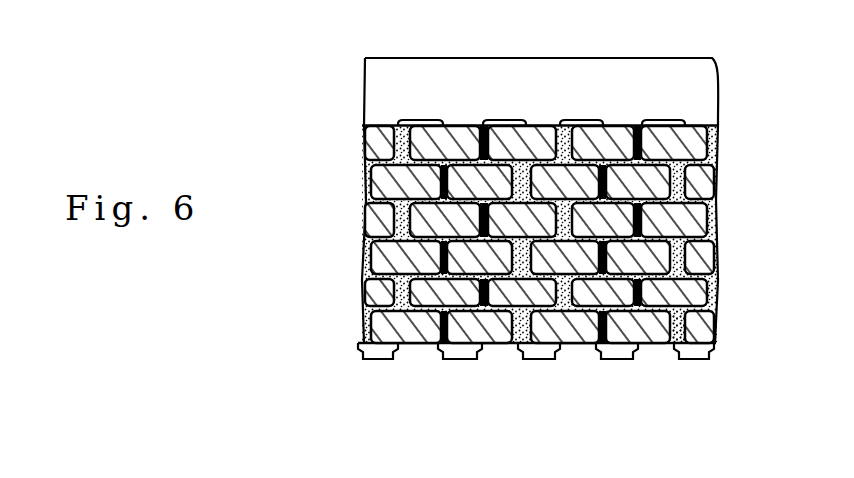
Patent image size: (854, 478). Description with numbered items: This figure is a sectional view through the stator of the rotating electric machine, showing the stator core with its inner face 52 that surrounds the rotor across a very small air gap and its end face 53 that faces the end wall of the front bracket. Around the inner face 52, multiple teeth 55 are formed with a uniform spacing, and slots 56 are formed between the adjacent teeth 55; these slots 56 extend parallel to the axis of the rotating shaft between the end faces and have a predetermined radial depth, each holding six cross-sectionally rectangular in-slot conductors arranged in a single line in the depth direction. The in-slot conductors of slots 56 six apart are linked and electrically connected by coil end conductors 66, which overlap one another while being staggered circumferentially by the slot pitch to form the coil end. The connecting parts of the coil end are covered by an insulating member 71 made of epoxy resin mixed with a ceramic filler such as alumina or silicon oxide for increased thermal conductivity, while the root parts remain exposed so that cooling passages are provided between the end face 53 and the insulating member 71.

The end face 53 is at (698, 88).
The coil end conductors 66 is at (683, 153).
The inner face 52 is at (376, 360).
The slots 56 is at (579, 346).
The insulating member 71 is at (673, 341).
The teeth 55 is at (695, 360).